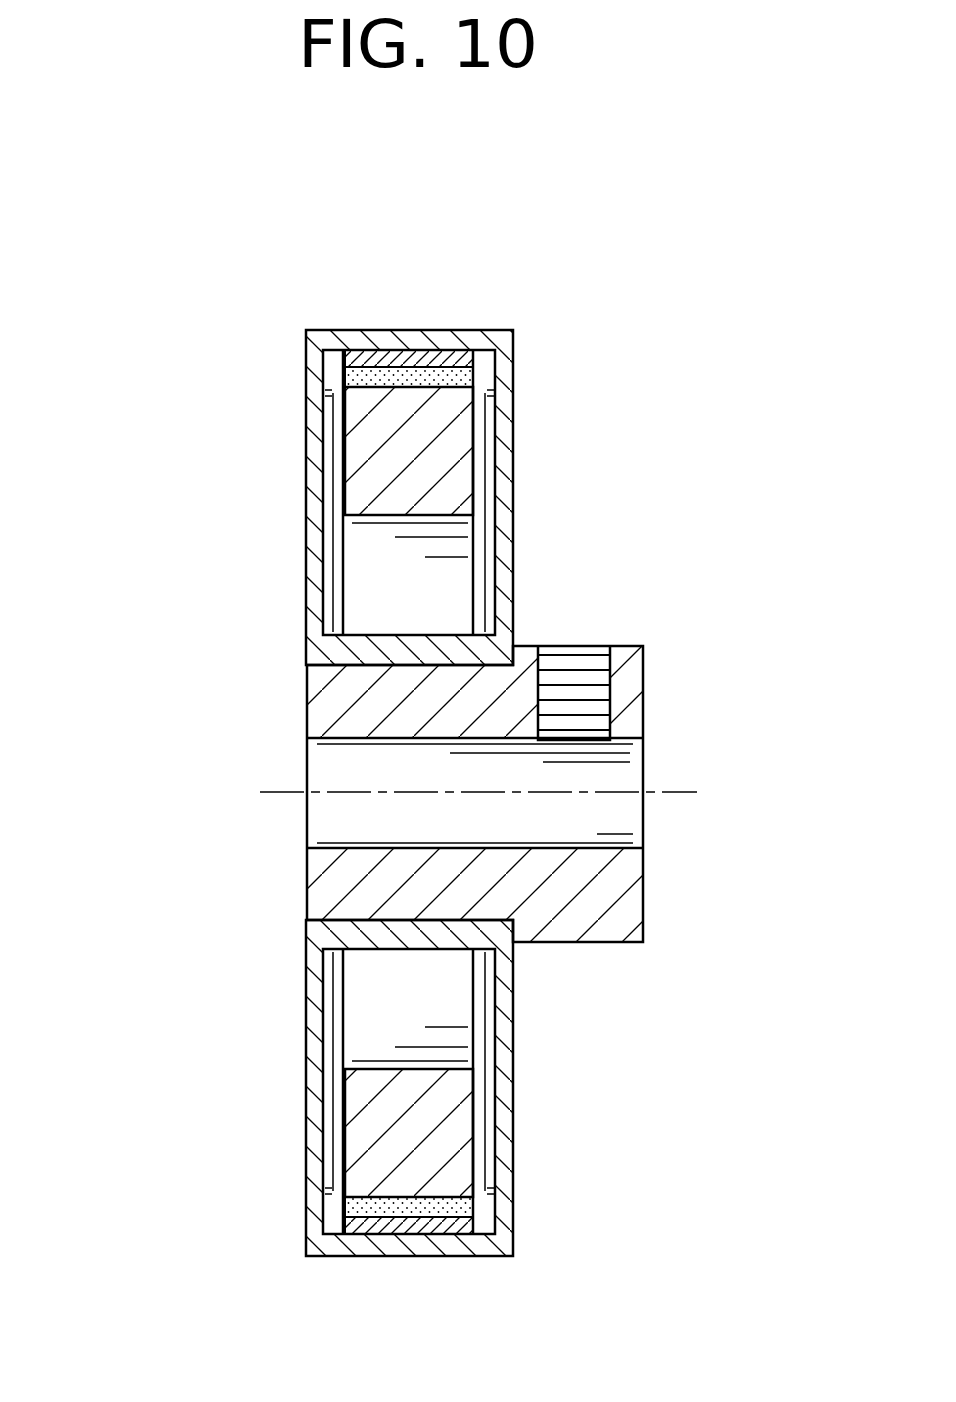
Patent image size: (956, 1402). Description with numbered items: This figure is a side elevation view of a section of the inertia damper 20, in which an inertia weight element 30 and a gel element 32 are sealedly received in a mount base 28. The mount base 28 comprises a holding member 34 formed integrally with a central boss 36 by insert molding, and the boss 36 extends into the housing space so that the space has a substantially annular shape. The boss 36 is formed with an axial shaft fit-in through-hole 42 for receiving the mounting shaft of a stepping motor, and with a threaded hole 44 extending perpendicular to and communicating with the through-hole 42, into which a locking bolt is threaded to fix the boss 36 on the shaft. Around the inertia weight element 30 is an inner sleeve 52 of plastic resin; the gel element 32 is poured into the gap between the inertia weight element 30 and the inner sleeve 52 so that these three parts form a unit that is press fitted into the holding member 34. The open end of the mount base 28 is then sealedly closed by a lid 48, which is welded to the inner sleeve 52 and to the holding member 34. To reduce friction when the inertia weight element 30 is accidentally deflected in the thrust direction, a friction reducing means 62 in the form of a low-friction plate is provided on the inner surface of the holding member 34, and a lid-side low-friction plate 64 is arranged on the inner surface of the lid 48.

The inertia damper 20 is at (187, 318).
The mount base 28 is at (745, 875).
The inertia weight element 30 is at (442, 437).
The gel element 32 is at (442, 373).
The holding member 34 is at (510, 1015).
The boss 36 is at (622, 890).
The shaft fit-in through-hole 42 is at (627, 770).
The threaded hole 44 is at (588, 643).
The lid 48 is at (308, 583).
The inner sleeve 52 is at (385, 355).
The friction reducing means 62 is at (467, 487).
The lid-side low-friction plate 64 is at (350, 452).